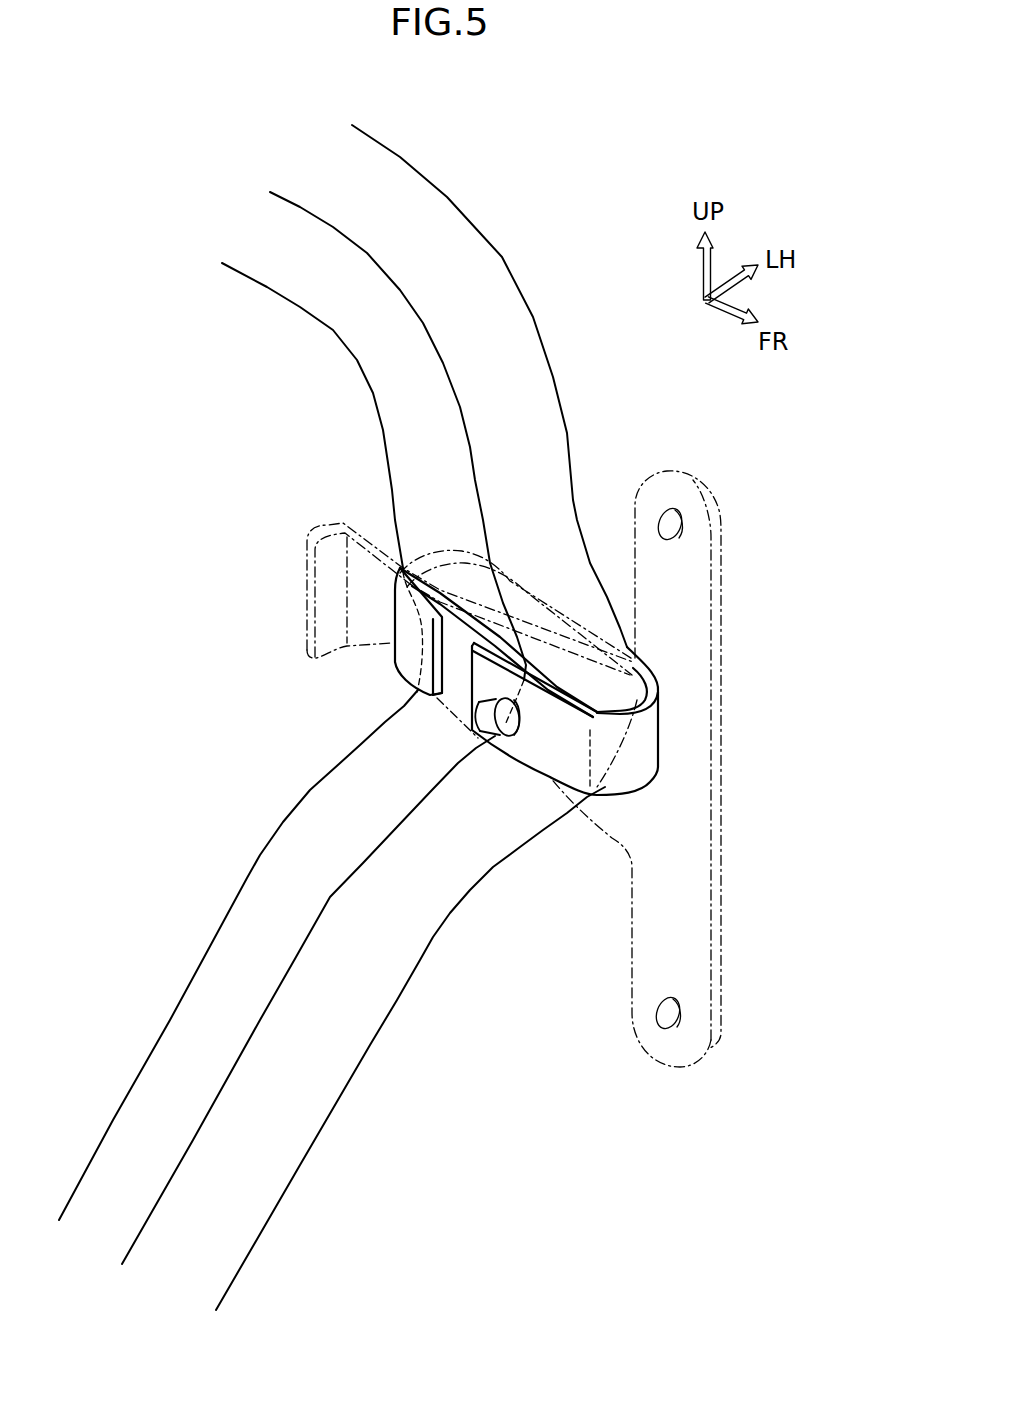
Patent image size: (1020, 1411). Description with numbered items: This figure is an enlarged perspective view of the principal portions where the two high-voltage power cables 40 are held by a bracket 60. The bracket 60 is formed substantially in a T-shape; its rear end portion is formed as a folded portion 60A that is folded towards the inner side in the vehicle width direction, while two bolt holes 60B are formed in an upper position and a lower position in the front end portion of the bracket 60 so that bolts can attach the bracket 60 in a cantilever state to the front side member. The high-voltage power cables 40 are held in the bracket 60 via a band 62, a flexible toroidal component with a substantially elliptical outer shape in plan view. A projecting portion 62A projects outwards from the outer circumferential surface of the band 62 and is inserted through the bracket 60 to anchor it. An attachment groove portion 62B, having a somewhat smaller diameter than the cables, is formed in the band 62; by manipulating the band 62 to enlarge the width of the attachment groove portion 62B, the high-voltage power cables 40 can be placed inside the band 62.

The high-voltage power cables 40 is at (503, 259).
The bracket 60 is at (725, 693).
The folded portion 60A is at (307, 585).
The bolt holes 60B is at (680, 526).
The band 62 is at (652, 663).
The projecting portion 62A is at (480, 727).
The attachment groove portion 62B is at (435, 647).